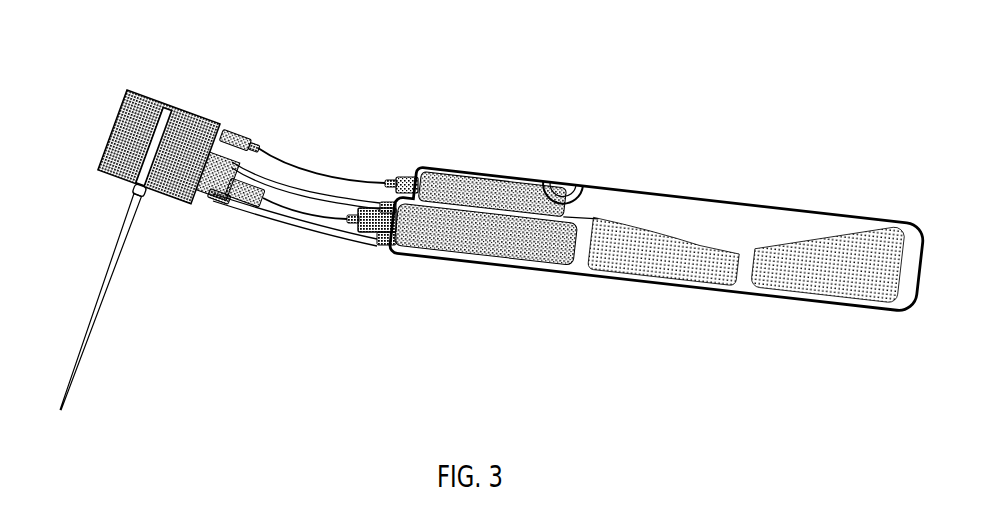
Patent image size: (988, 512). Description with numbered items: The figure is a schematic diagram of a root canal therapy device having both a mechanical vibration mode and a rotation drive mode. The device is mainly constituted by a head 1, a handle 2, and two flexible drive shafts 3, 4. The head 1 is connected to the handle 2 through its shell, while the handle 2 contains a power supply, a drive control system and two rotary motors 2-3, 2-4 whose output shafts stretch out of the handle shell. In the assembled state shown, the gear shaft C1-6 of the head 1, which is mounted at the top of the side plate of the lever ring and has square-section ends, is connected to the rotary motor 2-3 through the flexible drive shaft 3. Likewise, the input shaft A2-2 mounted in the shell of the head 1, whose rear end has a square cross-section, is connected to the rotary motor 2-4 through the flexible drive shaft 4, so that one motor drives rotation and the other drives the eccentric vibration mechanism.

The head 1 is at (158, 113).
The handle 2 is at (645, 207).
The rotary motor 2-3 is at (462, 185).
The rotary motor 2-4 is at (462, 232).
The flexible drive shaft 3 is at (312, 172).
The flexible drive shaft 4 is at (310, 213).
The gear shaft C1-6 is at (233, 137).
The input shaft A2-2 is at (240, 192).